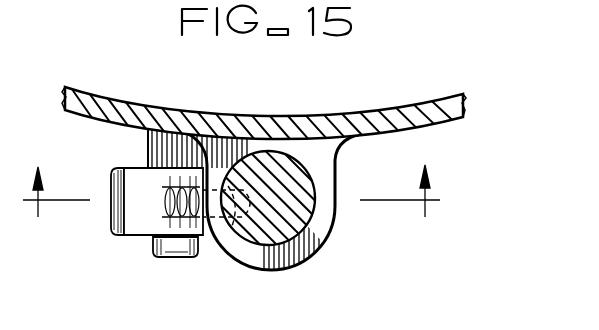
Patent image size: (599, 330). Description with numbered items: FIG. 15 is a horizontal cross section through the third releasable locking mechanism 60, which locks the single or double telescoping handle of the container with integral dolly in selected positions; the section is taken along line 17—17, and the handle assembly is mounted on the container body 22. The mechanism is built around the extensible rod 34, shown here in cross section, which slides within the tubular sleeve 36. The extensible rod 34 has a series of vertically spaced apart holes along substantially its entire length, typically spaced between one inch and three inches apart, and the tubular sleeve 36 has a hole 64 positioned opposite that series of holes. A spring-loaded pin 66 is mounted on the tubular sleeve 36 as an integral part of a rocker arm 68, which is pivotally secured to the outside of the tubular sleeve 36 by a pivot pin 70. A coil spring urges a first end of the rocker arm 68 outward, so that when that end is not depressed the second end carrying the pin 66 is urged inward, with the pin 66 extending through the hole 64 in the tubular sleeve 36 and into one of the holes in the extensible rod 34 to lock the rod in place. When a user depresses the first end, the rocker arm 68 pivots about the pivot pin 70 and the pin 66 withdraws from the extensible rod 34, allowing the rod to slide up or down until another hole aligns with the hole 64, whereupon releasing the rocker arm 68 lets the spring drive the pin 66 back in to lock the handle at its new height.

The section line 17- 17 is at (236, 202).
The container body 22 is at (160, 100).
The third releasable locking mechanism 60 is at (385, 88).
The tubular sleeve 36 is at (350, 176).
The extensible rod 34 is at (297, 218).
The rocker arm 68 is at (119, 235).
The pivot pin 70 is at (148, 259).
The hole in the tubular sleeve 64 is at (230, 233).
The spring-loaded pin 66 is at (237, 230).